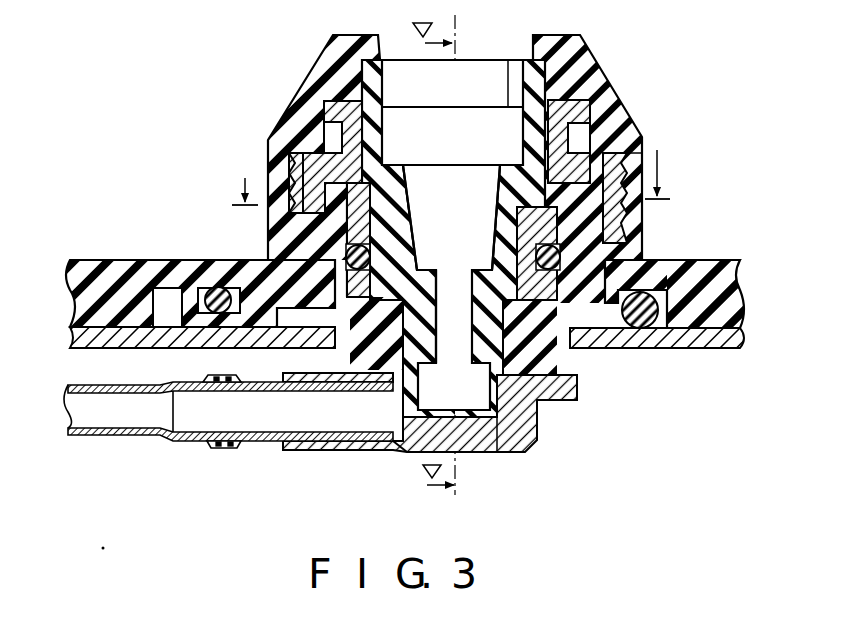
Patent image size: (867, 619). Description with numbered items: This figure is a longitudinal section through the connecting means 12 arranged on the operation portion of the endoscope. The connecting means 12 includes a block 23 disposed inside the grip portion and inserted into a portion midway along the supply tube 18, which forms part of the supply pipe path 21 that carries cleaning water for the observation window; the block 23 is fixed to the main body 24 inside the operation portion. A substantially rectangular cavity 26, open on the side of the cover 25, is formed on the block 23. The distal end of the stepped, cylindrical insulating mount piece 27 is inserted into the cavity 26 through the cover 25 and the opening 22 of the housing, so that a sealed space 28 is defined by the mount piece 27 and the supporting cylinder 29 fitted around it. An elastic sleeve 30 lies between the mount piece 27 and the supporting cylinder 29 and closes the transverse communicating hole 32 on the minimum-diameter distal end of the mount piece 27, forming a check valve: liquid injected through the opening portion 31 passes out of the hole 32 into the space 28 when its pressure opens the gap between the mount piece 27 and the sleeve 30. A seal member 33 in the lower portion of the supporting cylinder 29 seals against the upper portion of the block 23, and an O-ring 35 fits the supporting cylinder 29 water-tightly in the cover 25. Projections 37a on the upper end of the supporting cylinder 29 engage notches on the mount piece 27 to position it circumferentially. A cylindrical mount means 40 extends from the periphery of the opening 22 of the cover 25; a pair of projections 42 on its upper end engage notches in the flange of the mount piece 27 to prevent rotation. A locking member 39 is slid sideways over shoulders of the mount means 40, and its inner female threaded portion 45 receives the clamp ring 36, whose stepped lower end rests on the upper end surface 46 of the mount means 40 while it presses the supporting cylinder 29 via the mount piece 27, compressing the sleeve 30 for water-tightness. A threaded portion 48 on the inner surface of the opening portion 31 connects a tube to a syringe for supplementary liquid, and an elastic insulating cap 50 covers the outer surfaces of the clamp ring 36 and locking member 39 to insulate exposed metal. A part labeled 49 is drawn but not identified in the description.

The connecting means 12 is at (230, 66).
The supply tube 18 is at (123, 437).
The supply pipe path 21 is at (93, 403).
The opening 22 is at (558, 334).
The block 23 is at (467, 452).
The main body 24 is at (685, 338).
The cover 25 is at (232, 266).
The cavity 26 is at (502, 428).
The mount piece 27 is at (341, 103).
The sealed space 28 is at (438, 374).
The supporting cylinder 29 is at (380, 232).
The sleeve 30 is at (540, 423).
The opening portion 31 is at (490, 117).
The communicating hole 32 is at (429, 431).
The seal member 33 is at (395, 258).
The O-ring 35 is at (312, 260).
The clamp ring 36 is at (576, 110).
The projections 37a is at (522, 223).
The locking member 39 is at (628, 155).
The mount means 40 is at (597, 247).
The projections 42 is at (332, 130).
The female threaded portion 45 is at (290, 160).
The upper end surface 46 is at (657, 158).
The threaded portion 48 is at (402, 84).
The stem shoulder 49 is at (420, 184).
The insulating cap 50 is at (320, 73).